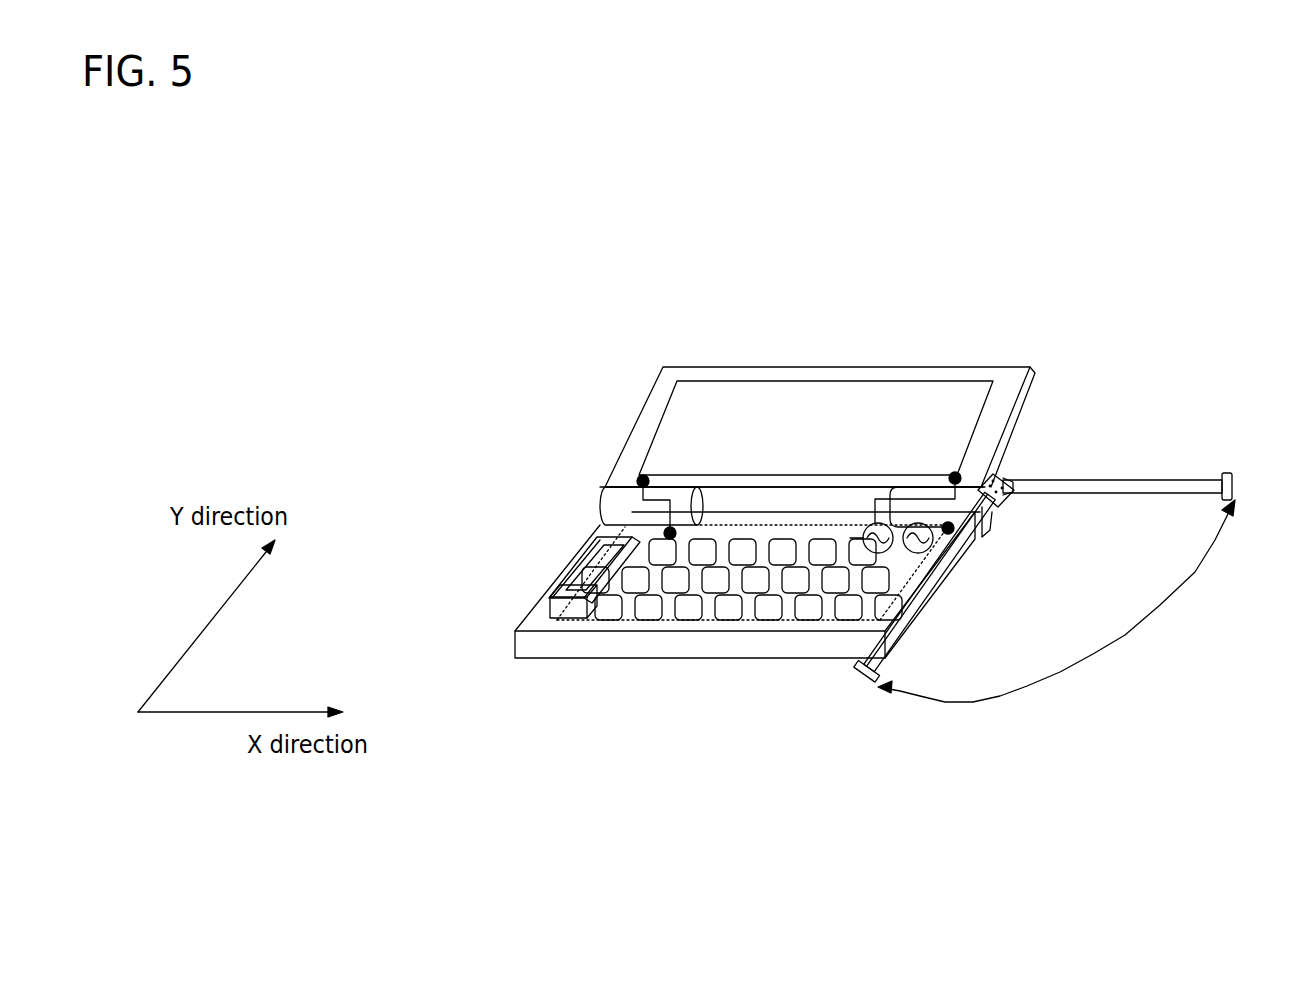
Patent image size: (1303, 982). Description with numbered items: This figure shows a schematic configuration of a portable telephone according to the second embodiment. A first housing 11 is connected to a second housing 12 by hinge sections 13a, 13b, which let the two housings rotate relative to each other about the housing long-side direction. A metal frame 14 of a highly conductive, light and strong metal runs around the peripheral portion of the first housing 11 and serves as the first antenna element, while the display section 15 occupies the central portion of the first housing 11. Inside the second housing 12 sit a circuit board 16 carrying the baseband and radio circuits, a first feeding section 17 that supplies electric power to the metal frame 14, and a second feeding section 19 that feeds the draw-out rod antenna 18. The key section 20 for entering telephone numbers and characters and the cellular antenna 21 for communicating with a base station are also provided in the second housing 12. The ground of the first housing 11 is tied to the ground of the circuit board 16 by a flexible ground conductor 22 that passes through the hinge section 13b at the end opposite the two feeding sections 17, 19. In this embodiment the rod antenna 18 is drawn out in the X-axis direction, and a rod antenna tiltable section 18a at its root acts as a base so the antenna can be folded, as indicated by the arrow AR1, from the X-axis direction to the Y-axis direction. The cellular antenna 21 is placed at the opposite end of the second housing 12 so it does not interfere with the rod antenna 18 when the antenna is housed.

The first housing 11 is at (962, 366).
The second housing 12 is at (530, 645).
The hinge section 13a is at (981, 515).
The hinge section 13b is at (607, 510).
The metal frame 14 is at (1007, 398).
The display section 15 is at (783, 395).
The circuit board 16 is at (712, 622).
The first feeding section 17 is at (925, 600).
The rod antenna 18 is at (1130, 482).
The rod antenna tiltable section 18a is at (1013, 492).
The second feeding section 19 is at (920, 555).
The key section 20 is at (578, 568).
The cellular antenna 21 is at (598, 532).
The flexible ground conductor 22 is at (643, 497).
The antenna rotation direction arrow AR1 is at (1173, 608).